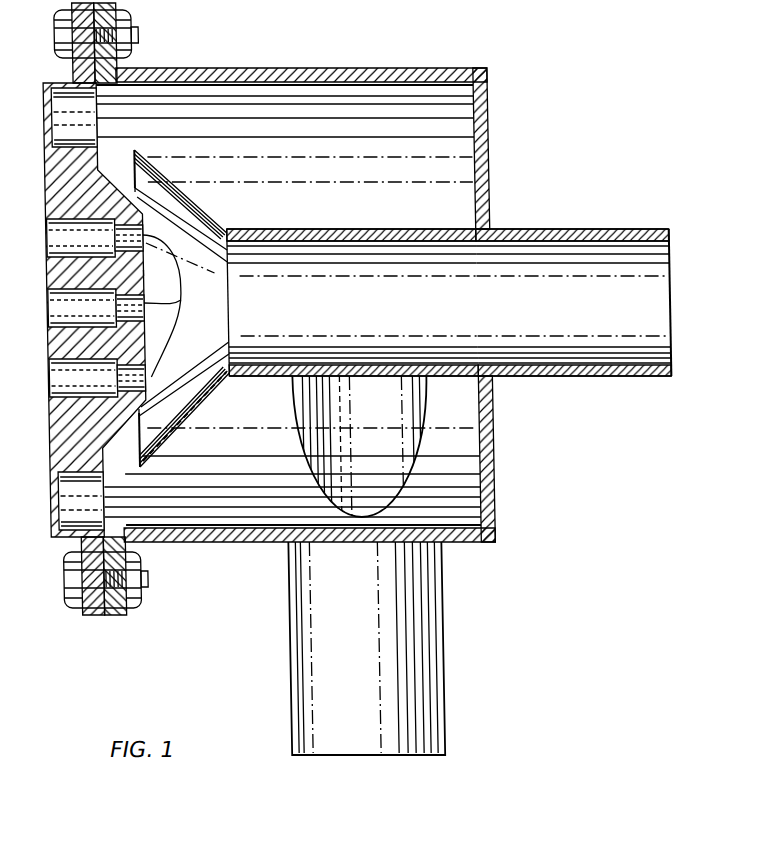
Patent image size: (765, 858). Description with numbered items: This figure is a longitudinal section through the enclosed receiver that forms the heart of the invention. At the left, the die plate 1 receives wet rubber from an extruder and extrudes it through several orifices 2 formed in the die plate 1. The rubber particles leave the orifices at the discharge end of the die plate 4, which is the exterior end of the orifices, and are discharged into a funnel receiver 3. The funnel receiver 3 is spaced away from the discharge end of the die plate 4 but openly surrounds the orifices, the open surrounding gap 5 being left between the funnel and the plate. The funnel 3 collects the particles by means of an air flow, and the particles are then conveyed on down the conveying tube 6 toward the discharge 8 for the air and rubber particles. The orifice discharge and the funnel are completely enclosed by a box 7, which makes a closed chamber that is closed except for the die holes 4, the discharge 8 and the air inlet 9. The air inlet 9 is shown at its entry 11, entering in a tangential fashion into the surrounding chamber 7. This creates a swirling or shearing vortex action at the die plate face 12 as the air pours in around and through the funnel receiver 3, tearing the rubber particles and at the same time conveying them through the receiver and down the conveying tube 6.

The die plate 1 is at (46, 167).
The orifices 2 is at (76, 248).
The funnel receiver 3 is at (182, 192).
The discharge end of the die plate 4 is at (182, 300).
The open surrounding space 5 is at (124, 177).
The conveying tube 6 is at (292, 320).
The box 7 is at (241, 68).
The discharge 8 is at (632, 300).
The air inlet 9 is at (362, 798).
The air inlet entry 11 is at (370, 424).
The die plate face 12 is at (147, 272).